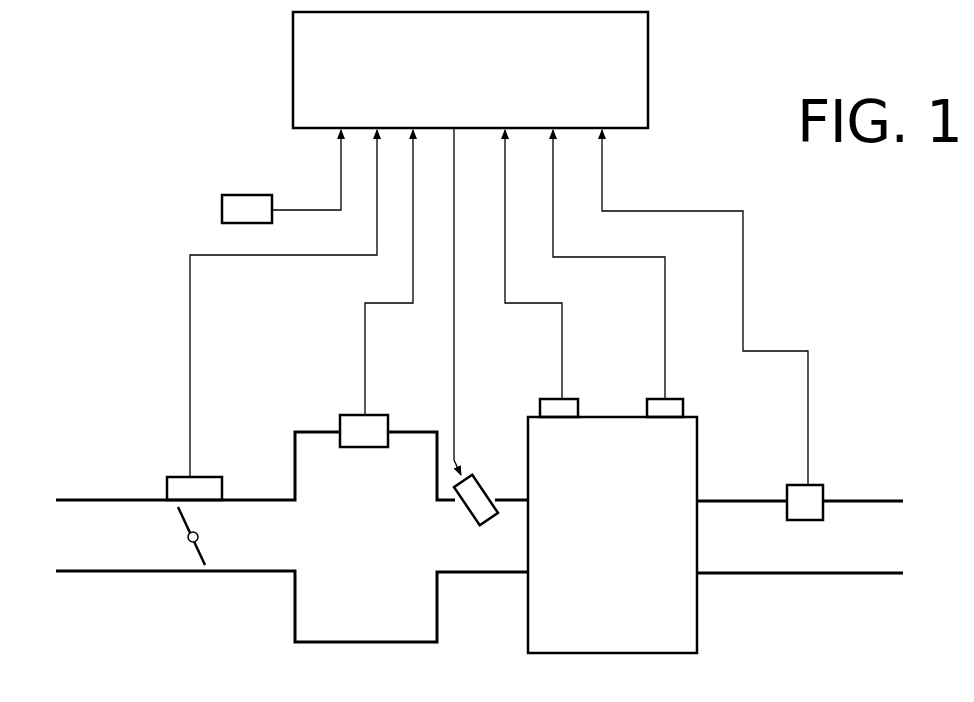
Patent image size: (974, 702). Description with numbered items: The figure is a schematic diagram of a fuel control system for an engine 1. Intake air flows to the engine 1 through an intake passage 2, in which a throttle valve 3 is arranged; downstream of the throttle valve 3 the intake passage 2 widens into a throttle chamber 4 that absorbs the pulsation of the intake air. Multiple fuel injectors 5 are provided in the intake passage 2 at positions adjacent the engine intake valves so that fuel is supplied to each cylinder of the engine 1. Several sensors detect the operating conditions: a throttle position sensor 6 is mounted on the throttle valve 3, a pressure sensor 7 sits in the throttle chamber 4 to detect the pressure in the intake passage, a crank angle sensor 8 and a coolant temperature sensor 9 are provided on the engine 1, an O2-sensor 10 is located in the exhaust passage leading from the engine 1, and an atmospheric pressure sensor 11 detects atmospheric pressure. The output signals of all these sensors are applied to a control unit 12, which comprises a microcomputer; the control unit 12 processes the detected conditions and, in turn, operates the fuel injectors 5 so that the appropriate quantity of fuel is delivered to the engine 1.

The engine 1 is at (632, 655).
The intake passage 2 is at (272, 574).
The throttle valve 3 is at (191, 545).
The throttle chamber 4 is at (422, 644).
The fuel injectors 5 is at (466, 512).
The throttle position sensor 6 is at (213, 477).
The pressure sensor 7 is at (384, 415).
The crank angle sensor 8 is at (578, 399).
The coolant temperature sensor 9 is at (684, 399).
The O2-sensor 10 is at (790, 485).
The atmospheric pressure sensor 11 is at (242, 195).
The control unit 12 is at (650, 72).